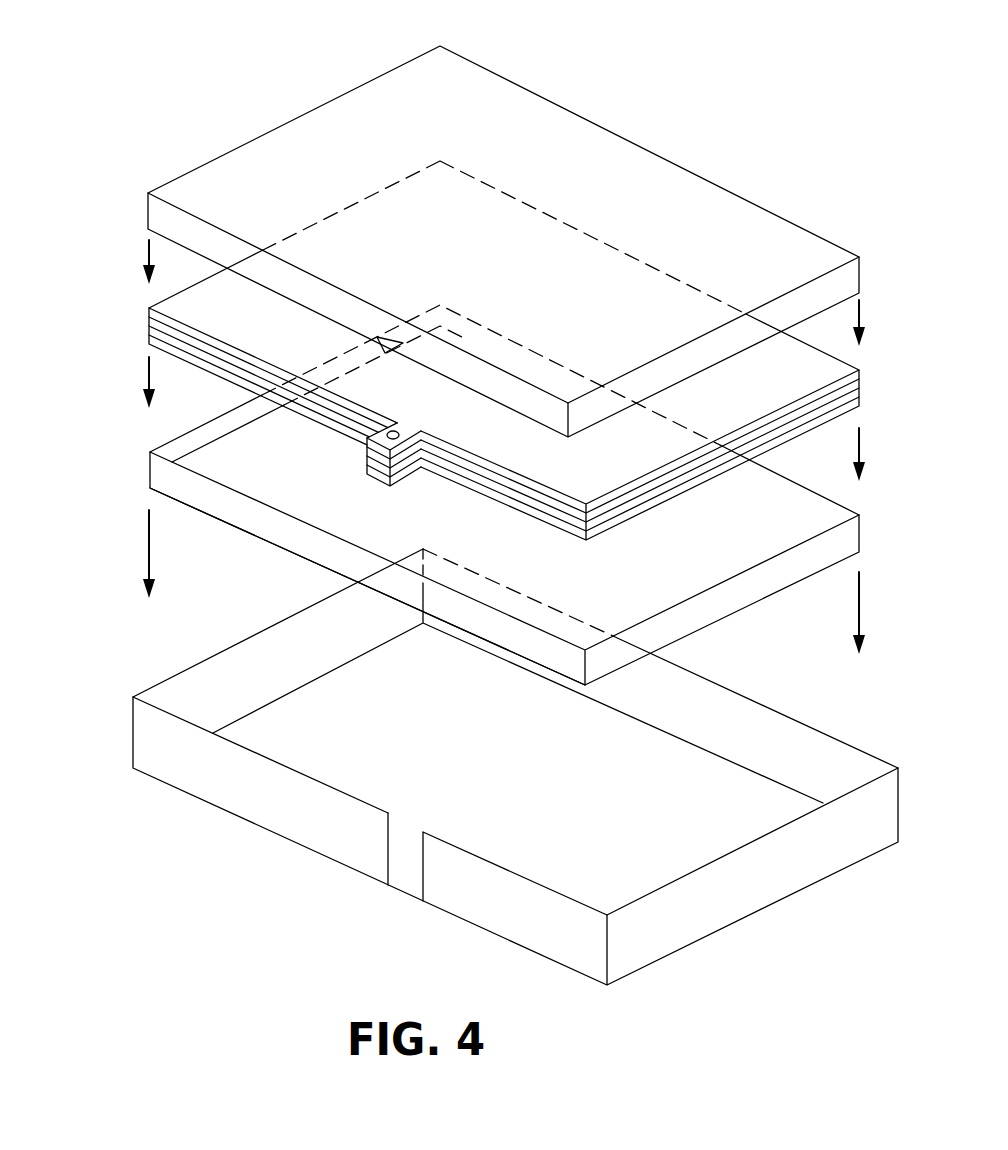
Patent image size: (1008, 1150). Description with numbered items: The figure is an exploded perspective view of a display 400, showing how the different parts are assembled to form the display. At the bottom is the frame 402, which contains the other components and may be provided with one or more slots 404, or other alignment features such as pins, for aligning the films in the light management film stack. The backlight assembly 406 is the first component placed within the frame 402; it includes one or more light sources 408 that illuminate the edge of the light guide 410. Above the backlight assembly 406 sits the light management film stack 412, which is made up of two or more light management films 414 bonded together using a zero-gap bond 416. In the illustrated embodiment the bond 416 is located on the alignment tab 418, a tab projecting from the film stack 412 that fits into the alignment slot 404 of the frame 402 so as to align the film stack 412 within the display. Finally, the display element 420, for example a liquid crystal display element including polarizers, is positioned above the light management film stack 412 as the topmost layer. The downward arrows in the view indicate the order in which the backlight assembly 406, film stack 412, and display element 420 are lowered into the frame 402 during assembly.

The display 400 is at (120, 92).
The frame 402 is at (507, 767).
The slot 404 is at (407, 872).
The backlight assembly 406 is at (452, 495).
The light source 408 is at (207, 442).
The light guide 410 is at (288, 538).
The light management film stack 412 is at (449, 350).
The light management film 414 is at (147, 341).
The zero-gap bond 416 is at (400, 434).
The alignment tab 418 is at (411, 454).
The display element 420 is at (247, 142).